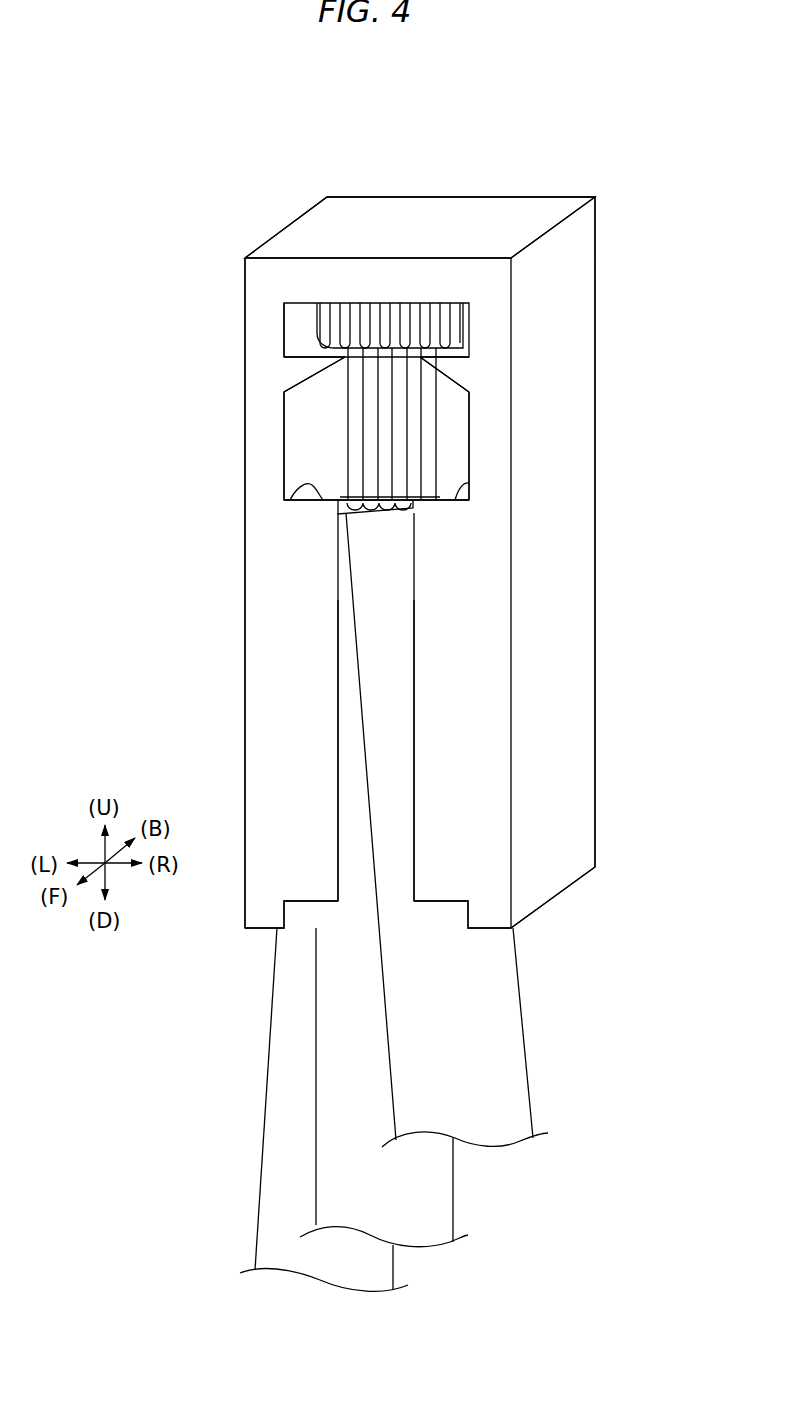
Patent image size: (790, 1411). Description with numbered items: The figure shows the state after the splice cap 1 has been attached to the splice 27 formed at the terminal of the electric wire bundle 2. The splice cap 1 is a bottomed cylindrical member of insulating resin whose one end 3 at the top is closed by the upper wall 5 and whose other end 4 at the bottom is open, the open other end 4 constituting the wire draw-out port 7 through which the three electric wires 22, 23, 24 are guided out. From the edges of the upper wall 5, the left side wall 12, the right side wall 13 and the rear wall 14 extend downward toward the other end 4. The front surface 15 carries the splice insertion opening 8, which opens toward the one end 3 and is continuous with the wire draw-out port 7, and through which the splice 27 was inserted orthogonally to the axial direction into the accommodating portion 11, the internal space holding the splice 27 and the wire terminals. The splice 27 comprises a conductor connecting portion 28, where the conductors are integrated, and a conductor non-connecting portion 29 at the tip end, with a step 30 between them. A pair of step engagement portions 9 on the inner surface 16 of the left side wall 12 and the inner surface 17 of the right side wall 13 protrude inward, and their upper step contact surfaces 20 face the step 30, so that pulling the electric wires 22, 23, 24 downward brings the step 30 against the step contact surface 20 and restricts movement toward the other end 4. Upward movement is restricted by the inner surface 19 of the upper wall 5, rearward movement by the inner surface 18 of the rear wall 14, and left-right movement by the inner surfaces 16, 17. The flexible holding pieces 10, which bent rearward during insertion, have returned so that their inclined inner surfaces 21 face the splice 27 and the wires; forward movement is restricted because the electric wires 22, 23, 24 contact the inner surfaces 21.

The splice cap 1 is at (630, 232).
The electric wire bundle 2 is at (222, 1085).
The one end 3 is at (548, 196).
The other end 4 is at (502, 933).
The upper wall 5 is at (467, 215).
The wire draw-out port 7 is at (355, 912).
The splice insertion opening 8 is at (290, 422).
The step engagement portions 9 is at (298, 368).
The holding pieces 10 is at (325, 715).
The accommodating portion 11 is at (318, 455).
The left side wall 12 is at (242, 452).
The right side wall 13 is at (557, 470).
The rear wall 14 is at (597, 613).
The front surface 15 is at (319, 618).
The inner surface of the left side wall 16 is at (296, 327).
The inner surface of the right side wall 17 is at (463, 410).
The inner surface of the rear wall 18 is at (467, 453).
The inner surface of the upper wall 19 is at (408, 312).
The step contact surface 20 is at (309, 347).
The inner surface of the holding piece 21 is at (328, 490).
The electric wire 22 is at (537, 1077).
The electric wire 23 is at (315, 1177).
The electric wire 24 is at (260, 1213).
The splice 27 is at (333, 112).
The conductor connecting portion 28 is at (375, 391).
The conductor non-connecting portion 29 is at (341, 321).
The step 30 is at (308, 345).